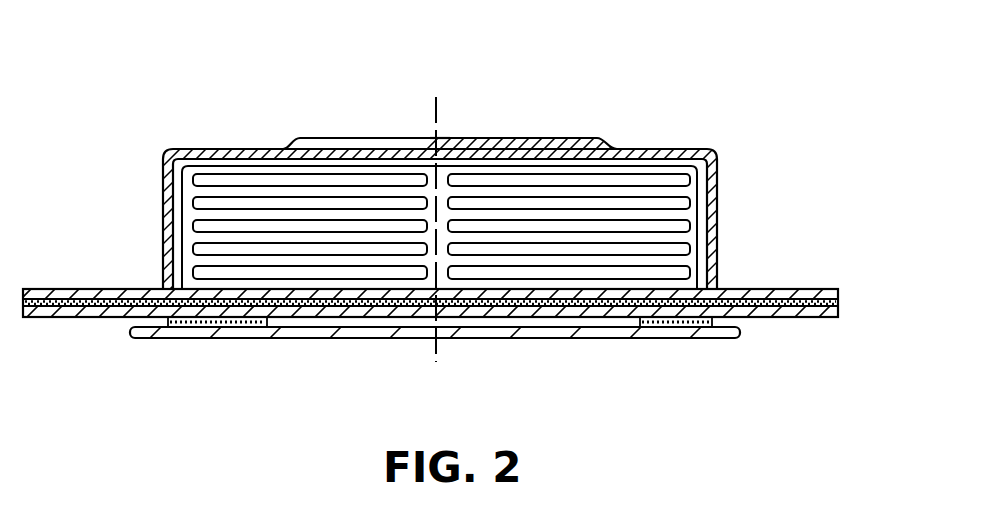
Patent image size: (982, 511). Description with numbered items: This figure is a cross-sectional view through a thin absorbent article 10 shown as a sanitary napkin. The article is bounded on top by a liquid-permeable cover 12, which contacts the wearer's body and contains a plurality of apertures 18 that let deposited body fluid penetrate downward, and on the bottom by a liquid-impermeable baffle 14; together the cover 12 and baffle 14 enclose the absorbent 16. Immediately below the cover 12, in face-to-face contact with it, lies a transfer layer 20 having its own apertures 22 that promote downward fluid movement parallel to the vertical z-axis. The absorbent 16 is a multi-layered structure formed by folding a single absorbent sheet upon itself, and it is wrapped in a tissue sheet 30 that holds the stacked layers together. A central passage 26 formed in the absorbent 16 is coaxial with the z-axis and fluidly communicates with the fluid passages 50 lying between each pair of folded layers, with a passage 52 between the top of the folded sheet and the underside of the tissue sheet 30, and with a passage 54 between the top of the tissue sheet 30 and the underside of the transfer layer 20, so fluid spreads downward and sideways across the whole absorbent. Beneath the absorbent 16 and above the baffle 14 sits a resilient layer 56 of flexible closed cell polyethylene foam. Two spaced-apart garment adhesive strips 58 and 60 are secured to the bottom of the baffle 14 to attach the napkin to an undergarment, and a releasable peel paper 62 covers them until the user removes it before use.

The thin absorbent article 10 is at (679, 58).
The liquid-permeable cover 12 is at (792, 288).
The liquid-impermeable baffle 14 is at (840, 317).
The absorbent 16 is at (724, 200).
The apertures 18 is at (407, 140).
The transfer layer 20 is at (590, 140).
The apertures 22 is at (567, 138).
The central passage 26 is at (443, 182).
The tissue sheet 30 is at (718, 158).
The fluid passages 50 is at (203, 210).
The passage 52 is at (206, 166).
The passage 54 is at (282, 149).
The resilient layer 56 is at (840, 300).
The garment adhesive strip 58 is at (242, 338).
The garment adhesive strip 60 is at (655, 338).
The releasable peel paper 62 is at (718, 340).